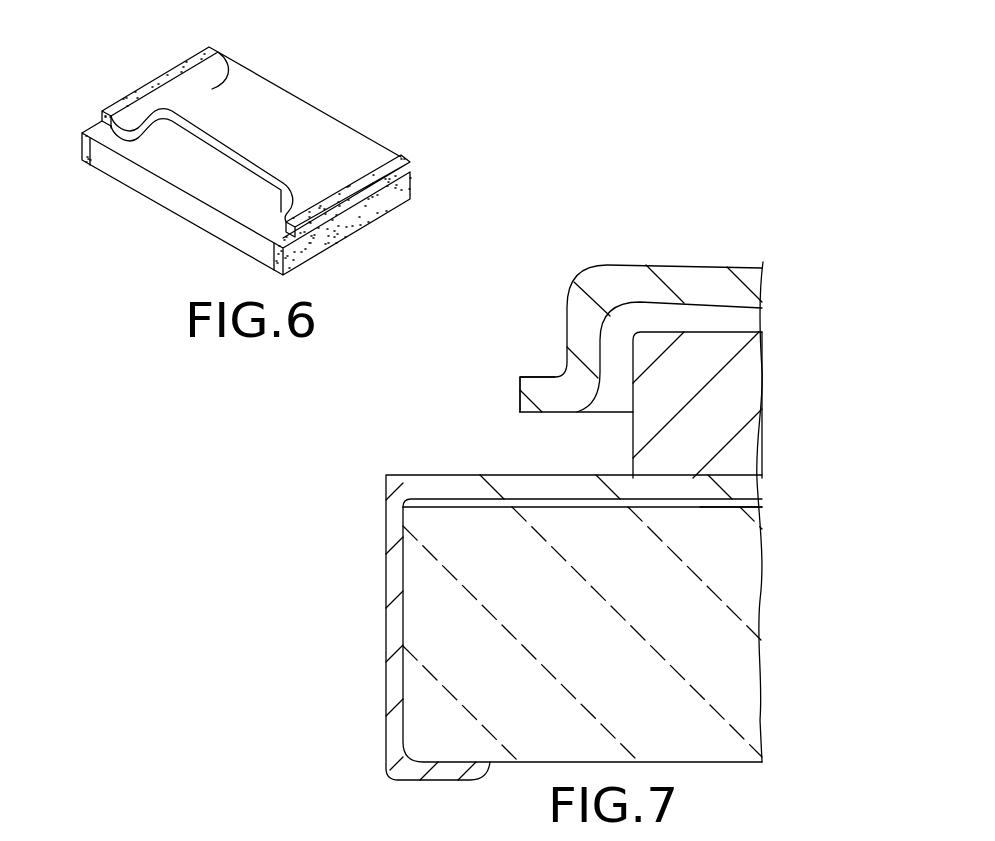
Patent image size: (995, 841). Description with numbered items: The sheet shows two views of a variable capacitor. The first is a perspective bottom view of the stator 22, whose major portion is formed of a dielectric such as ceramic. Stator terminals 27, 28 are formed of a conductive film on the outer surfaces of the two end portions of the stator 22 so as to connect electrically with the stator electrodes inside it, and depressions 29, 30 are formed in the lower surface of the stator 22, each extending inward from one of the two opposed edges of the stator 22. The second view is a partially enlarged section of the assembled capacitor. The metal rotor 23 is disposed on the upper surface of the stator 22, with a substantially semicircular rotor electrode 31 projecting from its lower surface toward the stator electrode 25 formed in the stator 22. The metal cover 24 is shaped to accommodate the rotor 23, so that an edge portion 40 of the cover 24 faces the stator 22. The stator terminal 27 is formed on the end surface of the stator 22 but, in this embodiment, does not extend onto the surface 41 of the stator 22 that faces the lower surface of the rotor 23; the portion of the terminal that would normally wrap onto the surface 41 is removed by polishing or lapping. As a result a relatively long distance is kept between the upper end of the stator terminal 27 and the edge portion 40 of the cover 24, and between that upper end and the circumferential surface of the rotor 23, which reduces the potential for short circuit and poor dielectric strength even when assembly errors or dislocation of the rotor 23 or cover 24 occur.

In FIG. 6, the stator 22 is at (107, 75).
In FIG. 7, the stator 22 is at (776, 690).
In FIG. 6, the stator terminal 27 is at (149, 73).
In FIG. 7, the stator terminal 27 is at (387, 612).
In FIG. 6, the stator terminal 28 is at (357, 220).
In FIG. 6, the depression 29 is at (280, 115).
In FIG. 6, the depression 30 is at (208, 160).
In FIG. 7, the rotor 23 is at (772, 364).
In FIG. 7, the cover 24 is at (590, 252).
In FIG. 7, the stator electrode 25 is at (705, 507).
In FIG. 7, the rotor electrode 31 is at (752, 468).
In FIG. 7, the edge portion 40 is at (520, 377).
In FIG. 7, the surface 41 is at (478, 477).